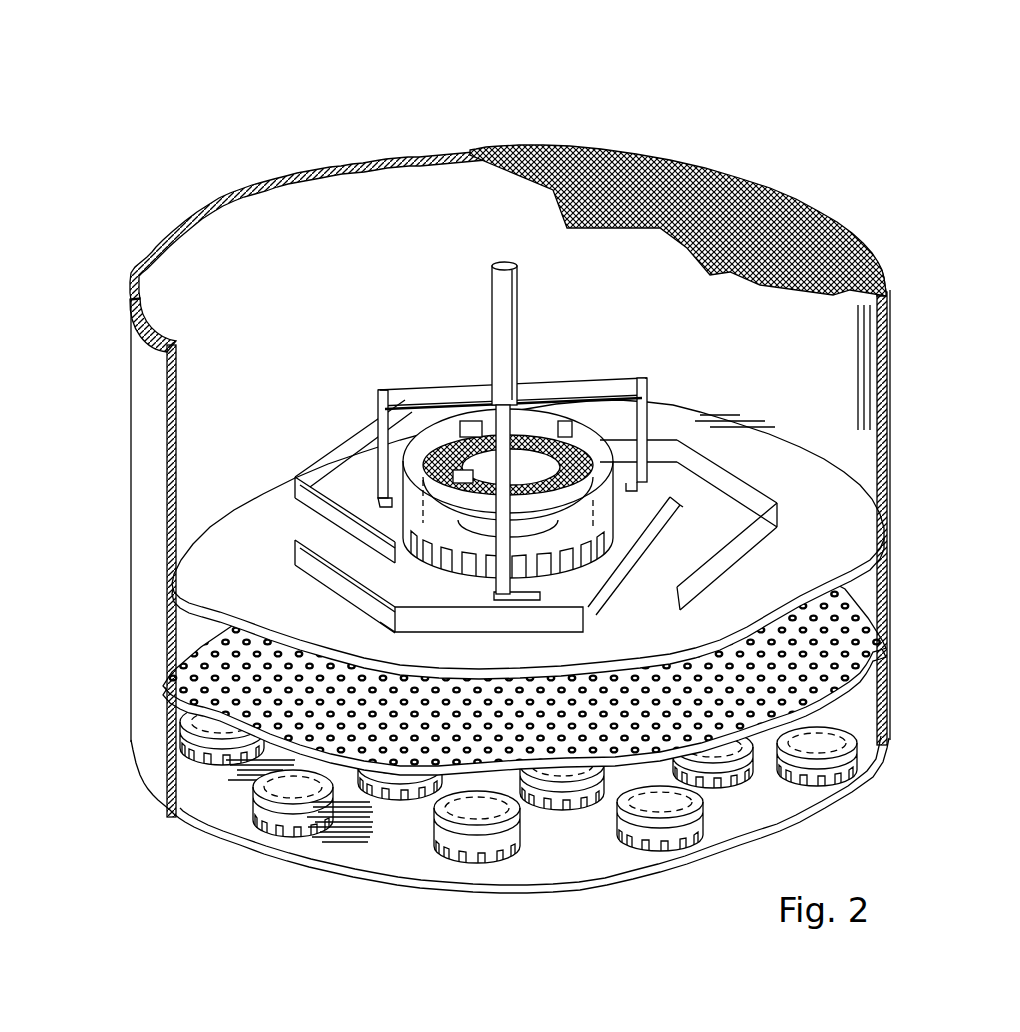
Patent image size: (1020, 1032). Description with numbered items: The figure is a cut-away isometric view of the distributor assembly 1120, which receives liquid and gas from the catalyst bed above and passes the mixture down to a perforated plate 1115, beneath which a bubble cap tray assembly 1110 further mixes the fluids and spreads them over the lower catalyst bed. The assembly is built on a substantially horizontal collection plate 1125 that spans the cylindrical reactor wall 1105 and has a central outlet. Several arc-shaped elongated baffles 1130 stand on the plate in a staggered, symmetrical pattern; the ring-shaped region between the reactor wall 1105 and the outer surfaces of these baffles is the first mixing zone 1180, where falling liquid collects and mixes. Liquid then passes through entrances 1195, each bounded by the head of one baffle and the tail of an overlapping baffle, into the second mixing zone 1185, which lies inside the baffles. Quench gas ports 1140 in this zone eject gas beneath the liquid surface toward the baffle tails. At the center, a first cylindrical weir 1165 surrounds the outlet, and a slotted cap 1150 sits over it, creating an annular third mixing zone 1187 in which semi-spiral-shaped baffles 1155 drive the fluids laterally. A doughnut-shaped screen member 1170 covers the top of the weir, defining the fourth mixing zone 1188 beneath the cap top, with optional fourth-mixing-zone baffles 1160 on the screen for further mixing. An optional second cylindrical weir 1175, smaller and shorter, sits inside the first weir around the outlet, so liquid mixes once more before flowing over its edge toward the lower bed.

The cylindrical reactor wall 1105 is at (135, 372).
The bubble cap tray assembly 1110 is at (343, 850).
The perforated plate 1115 is at (205, 707).
The distributor assembly 1120 is at (738, 63).
The collection plate 1125 is at (308, 615).
The arc-shaped elongated baffles 1130 is at (348, 440).
The quench gas ports 1140 is at (383, 503).
The cap 1150 is at (580, 408).
The semi-spiral-shaped baffles 1155 is at (380, 386).
The fourth-mixing-zone baffles 1160 is at (460, 422).
The first cylindrical weir 1165 is at (405, 412).
The doughnut-shaped screen member 1170 is at (422, 395).
The second cylindrical weir 1175 is at (565, 515).
The first mixing zone 1180 is at (805, 476).
The second mixing zone 1185 is at (417, 597).
The third mixing zone 1187 is at (598, 420).
The fourth mixing zone 1188 is at (520, 405).
The entrances 1195 is at (395, 565).